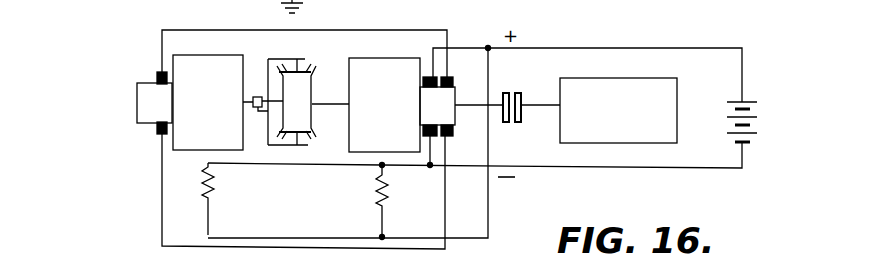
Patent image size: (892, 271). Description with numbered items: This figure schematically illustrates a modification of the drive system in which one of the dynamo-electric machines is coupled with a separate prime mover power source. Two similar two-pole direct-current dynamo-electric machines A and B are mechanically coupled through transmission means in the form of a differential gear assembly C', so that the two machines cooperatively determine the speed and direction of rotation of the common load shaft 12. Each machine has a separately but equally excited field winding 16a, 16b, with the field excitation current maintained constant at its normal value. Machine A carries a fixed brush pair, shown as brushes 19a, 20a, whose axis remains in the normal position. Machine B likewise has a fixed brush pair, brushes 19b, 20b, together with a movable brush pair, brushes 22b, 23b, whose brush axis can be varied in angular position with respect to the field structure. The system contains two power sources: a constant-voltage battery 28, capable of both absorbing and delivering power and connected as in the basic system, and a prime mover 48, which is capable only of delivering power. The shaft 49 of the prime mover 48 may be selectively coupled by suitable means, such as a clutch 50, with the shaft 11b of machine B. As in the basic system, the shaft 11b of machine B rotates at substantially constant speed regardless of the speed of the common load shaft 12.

The dynamo-electric machine A is at (180, 27).
The dynamo-electric machine B is at (383, 30).
The differential gear assembly C' is at (308, 91).
The common load shaft 12 is at (258, 97).
The brush 19a is at (158, 74).
The brush 20a is at (157, 132).
The brush 19b is at (427, 76).
The brush 20b is at (424, 137).
The movable brush 22b is at (450, 76).
The movable brush 23b is at (446, 138).
The field winding 16a is at (218, 185).
The field winding 16b is at (373, 176).
The shaft 11b is at (465, 105).
The shaft 49 is at (540, 103).
The prime mover 48 is at (670, 78).
The clutch 50 is at (515, 123).
The constant-voltage battery 28 is at (758, 123).